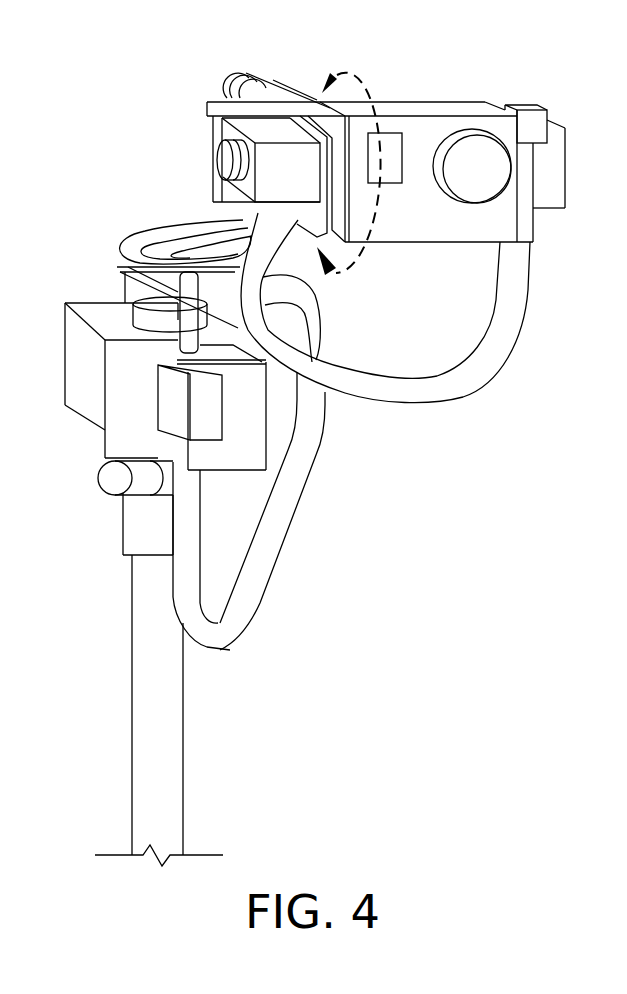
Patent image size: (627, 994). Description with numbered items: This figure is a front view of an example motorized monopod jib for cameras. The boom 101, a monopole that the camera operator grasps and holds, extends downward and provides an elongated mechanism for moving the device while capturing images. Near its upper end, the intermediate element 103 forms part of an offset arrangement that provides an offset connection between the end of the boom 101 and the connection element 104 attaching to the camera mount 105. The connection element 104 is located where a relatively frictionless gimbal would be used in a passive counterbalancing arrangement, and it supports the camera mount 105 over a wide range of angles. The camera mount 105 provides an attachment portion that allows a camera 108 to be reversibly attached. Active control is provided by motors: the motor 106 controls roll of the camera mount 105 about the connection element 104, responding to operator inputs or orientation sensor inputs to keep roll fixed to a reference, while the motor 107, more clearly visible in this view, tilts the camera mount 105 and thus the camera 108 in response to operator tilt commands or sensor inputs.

The boom 101 is at (172, 711).
The intermediate element 103 is at (248, 448).
The connection element 104 is at (298, 268).
The camera mount 105 is at (456, 110).
The motor 106 is at (280, 78).
The motor 107 is at (205, 159).
The camera 108 is at (473, 235).